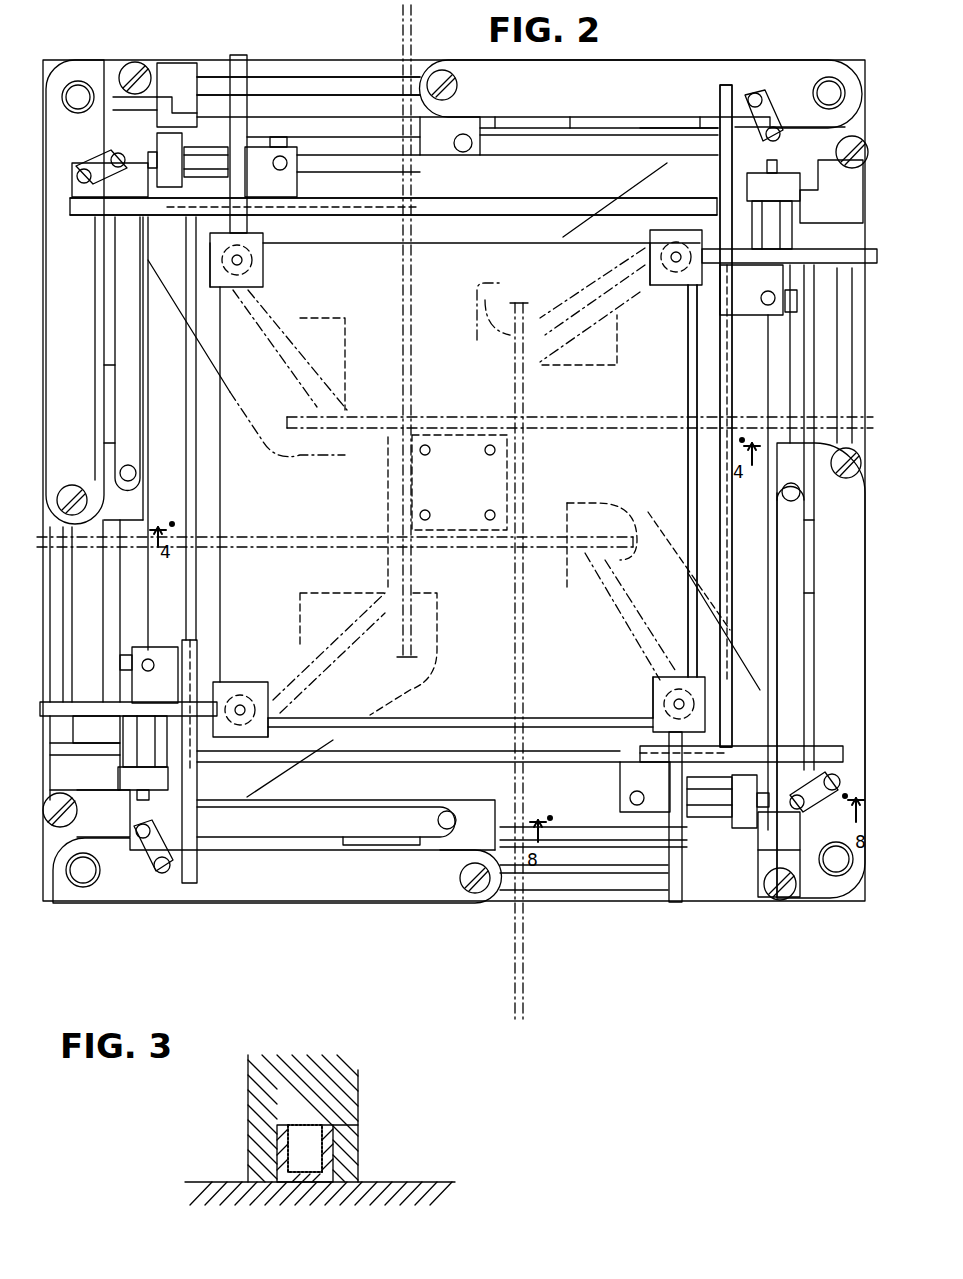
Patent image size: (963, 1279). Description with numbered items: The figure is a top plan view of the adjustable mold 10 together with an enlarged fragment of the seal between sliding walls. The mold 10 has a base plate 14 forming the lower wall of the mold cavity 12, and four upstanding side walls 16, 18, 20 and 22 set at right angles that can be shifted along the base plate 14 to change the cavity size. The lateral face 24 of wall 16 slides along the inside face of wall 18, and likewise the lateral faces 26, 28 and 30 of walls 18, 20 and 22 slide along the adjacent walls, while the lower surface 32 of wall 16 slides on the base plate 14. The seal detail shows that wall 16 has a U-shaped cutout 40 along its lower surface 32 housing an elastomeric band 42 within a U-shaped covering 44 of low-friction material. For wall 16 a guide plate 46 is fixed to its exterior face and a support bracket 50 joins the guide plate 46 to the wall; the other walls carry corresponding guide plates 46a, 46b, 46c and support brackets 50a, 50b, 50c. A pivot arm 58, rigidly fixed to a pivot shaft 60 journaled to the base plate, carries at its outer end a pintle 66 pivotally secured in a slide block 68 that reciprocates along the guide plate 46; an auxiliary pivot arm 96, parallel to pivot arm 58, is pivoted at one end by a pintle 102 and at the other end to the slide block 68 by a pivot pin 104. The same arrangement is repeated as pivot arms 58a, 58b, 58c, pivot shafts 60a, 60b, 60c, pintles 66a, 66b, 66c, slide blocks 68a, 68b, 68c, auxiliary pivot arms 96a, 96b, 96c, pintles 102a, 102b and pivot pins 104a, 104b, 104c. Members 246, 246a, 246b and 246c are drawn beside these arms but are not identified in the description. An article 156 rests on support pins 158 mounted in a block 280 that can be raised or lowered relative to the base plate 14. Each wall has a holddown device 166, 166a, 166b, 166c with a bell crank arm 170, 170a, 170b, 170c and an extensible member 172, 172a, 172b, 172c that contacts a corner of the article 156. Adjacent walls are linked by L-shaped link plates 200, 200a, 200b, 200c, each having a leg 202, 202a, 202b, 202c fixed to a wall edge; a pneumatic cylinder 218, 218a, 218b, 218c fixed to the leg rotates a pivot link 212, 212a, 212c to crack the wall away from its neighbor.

In FIG. 2, the adjustable mold 10 is at (712, 953).
In FIG. 2, the mold cavity 12 is at (482, 236).
In FIG. 2, the base plate 14 is at (172, 70).
In FIG. 3, the base plate 14 is at (418, 1192).
In FIG. 2, the side wall 16 is at (725, 515).
In FIG. 3, the side wall 16 is at (340, 1065).
In FIG. 2, the side wall 18 is at (536, 208).
In FIG. 2, the side wall 20 is at (403, 330).
In FIG. 2, the side wall 22 is at (328, 537).
In FIG. 2, the lateral face 24 is at (716, 190).
In FIG. 2, the lateral face 26 is at (190, 212).
In FIG. 2, the lateral face 28 is at (197, 778).
In FIG. 2, the lateral face 30 is at (740, 745).
In FIG. 3, the lower surface 32 is at (345, 1165).
In FIG. 3, the U-shaped cutout 40 is at (280, 1130).
In FIG. 3, the elastomeric band 42 is at (303, 1125).
In FIG. 3, the U-shaped covering 44 is at (320, 1185).
In FIG. 2, the guide plate 46 is at (800, 385).
In FIG. 2, the guide plate 46a is at (316, 76).
In FIG. 2, the guide plate 46b is at (128, 580).
In FIG. 2, the guide plate 46c is at (582, 890).
In FIG. 2, the support bracket 50 is at (810, 210).
In FIG. 2, the support bracket 50a is at (190, 100).
In FIG. 2, the support bracket 50b is at (103, 755).
In FIG. 2, the support bracket 50c is at (712, 860).
In FIG. 2, the pivot arm 58 is at (858, 620).
In FIG. 2, the pivot arm 58a is at (632, 80).
In FIG. 2, the pivot arm 58b is at (88, 314).
In FIG. 2, the pivot arm 58c is at (318, 895).
In FIG. 2, the pivot shaft 60 is at (840, 875).
In FIG. 2, the pivot shaft 60a is at (820, 90).
In FIG. 2, the pivot shaft 60b is at (78, 85).
In FIG. 2, the pivot shaft 60c is at (82, 885).
In FIG. 2, the pintle 66 is at (848, 478).
In FIG. 2, the pintle 66a is at (457, 86).
In FIG. 2, the pintle 66b is at (66, 485).
In FIG. 2, the pintle 66c is at (466, 870).
In FIG. 2, the slide block 68 is at (805, 495).
In FIG. 2, the slide block 68a is at (436, 156).
In FIG. 2, the slide block 68b is at (128, 505).
In FIG. 2, the slide block 68c is at (475, 806).
In FIG. 2, the auxiliary pivot arm 96 is at (790, 556).
In FIG. 2, the auxiliary pivot arm 96a is at (600, 155).
In FIG. 2, the auxiliary pivot arm 96b is at (132, 352).
In FIG. 2, the auxiliary pivot arm 96c is at (330, 806).
In FIG. 2, the pintle 102 is at (782, 901).
In FIG. 2, the pintle 102a is at (850, 168).
In FIG. 2, the pintle 102b is at (135, 62).
In FIG. 2, the pivot pin 104 is at (781, 493).
In FIG. 2, the pivot pin 104a is at (466, 153).
In FIG. 2, the pivot pin 104b is at (136, 468).
In FIG. 2, the pivot pin 104c is at (76, 812).
In FIG. 2, the article 156 is at (465, 726).
In FIG. 2, the support pins 158 is at (486, 513).
In FIG. 2, the holddown device 166 is at (650, 232).
In FIG. 2, the holddown device 166a is at (262, 238).
In FIG. 2, the holddown device 166b is at (268, 735).
In FIG. 2, the holddown device 166c is at (653, 690).
In FIG. 2, the bell crank arm 170 is at (808, 256).
In FIG. 2, the bell crank arm 170a is at (247, 115).
In FIG. 2, the bell crank arm 170b is at (108, 704).
In FIG. 2, the bell crank arm 170c is at (668, 838).
In FIG. 2, the extensible member 172 is at (676, 285).
In FIG. 2, the extensible member 172a is at (263, 262).
In FIG. 2, the extensible member 172b is at (243, 682).
In FIG. 2, the extensible member 172c is at (653, 700).
In FIG. 2, the L-shaped link plate 200 is at (716, 108).
In FIG. 2, the L-shaped link plate 200a is at (80, 220).
In FIG. 2, the L-shaped link plate 200b is at (199, 862).
In FIG. 2, the L-shaped link plate 200c is at (830, 746).
In FIG. 2, the leg 202 is at (746, 315).
In FIG. 2, the leg 202a is at (290, 188).
In FIG. 2, the leg 202b is at (178, 648).
In FIG. 2, the leg 202c is at (620, 770).
In FIG. 2, the pivot link 212 is at (770, 118).
In FIG. 2, the pivot link 212a is at (102, 160).
In FIG. 2, the pivot link 212c is at (146, 855).
In FIG. 2, the pneumatic cylinder 218 is at (773, 204).
In FIG. 2, the pneumatic cylinder 218a is at (190, 160).
In FIG. 2, the pneumatic cylinder 218b is at (170, 720).
In FIG. 2, the pneumatic cylinder 218c is at (728, 801).
In FIG. 2, the rod 246 is at (735, 383).
In FIG. 2, the rod 246a is at (368, 172).
In FIG. 2, the rod 246b is at (172, 508).
In FIG. 2, the rod 246c is at (560, 790).
In FIG. 2, the block 280 is at (478, 489).